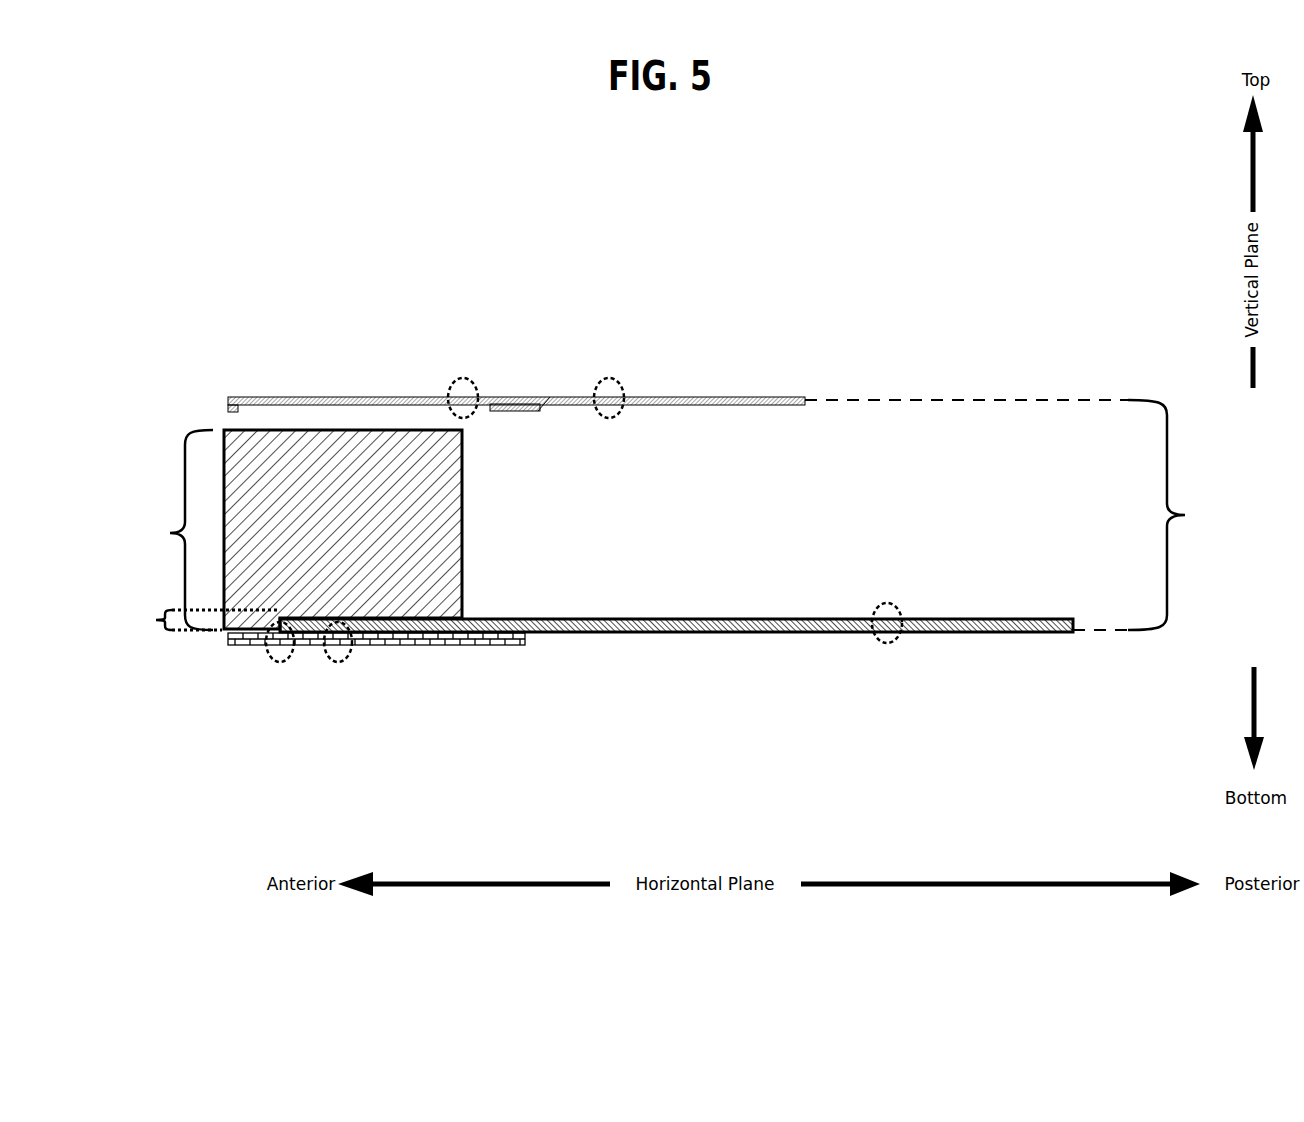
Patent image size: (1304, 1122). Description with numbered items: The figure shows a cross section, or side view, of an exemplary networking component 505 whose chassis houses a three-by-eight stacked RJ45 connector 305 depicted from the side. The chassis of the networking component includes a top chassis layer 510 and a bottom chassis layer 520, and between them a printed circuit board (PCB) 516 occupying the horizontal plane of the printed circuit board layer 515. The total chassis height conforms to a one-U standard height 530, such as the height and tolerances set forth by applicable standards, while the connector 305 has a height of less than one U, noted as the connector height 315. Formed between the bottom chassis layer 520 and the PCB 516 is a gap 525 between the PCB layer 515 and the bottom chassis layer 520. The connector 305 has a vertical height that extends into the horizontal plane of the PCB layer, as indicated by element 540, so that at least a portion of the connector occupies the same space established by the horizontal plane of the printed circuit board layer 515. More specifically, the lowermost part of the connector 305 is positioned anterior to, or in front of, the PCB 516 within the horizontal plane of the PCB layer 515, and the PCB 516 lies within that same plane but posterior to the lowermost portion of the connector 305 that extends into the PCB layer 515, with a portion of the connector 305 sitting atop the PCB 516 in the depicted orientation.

The networking component 505 is at (405, 180).
The 3×8 stacked RJ45 connector 305 is at (295, 427).
The top chassis layer 510 is at (474, 382).
The printed circuit board layer 515 is at (676, 559).
The printed circuit board (PCB) 516 is at (885, 598).
The bottom chassis layer 520 is at (293, 663).
The gap 525 is at (532, 636).
The 1U standard chassis height 530 is at (1187, 515).
The connector height less than 1U 315 is at (143, 530).
The vertical height of connector extending into horizontal plane of PCB layer 540 is at (150, 627).